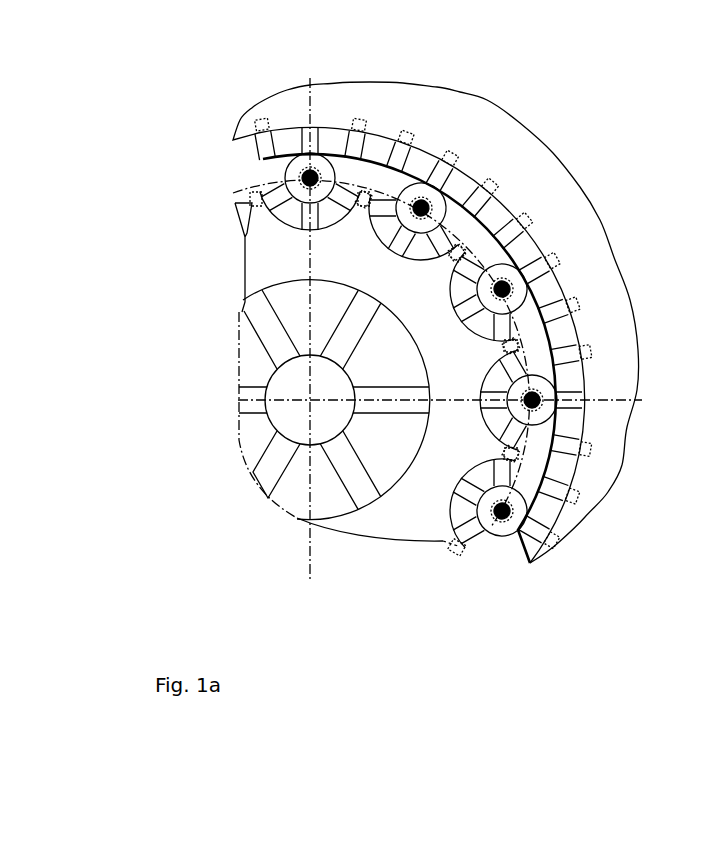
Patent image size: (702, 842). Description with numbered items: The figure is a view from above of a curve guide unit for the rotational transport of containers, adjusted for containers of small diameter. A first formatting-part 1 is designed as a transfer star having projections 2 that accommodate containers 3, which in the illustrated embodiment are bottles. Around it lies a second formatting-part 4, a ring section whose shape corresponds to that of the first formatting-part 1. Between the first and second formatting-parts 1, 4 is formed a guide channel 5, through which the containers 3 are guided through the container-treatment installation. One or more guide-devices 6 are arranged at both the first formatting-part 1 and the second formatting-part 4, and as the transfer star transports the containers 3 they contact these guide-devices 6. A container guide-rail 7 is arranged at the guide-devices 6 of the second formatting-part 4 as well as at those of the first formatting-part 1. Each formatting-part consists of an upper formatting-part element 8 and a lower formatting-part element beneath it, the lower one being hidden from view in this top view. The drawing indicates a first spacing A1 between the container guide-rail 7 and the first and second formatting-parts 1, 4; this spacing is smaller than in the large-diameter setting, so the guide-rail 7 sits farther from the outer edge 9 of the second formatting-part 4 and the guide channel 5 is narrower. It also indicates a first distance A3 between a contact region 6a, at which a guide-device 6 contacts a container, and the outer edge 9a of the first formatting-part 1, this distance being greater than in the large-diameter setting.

The first formatting-part 1 is at (215, 460).
The projections 2 is at (236, 272).
The containers 3 is at (286, 177).
The second formatting-part 4 is at (600, 498).
The guide channel 5 is at (503, 556).
The guide-devices 6 is at (562, 263).
The contact region 6a is at (478, 291).
The container guide-rail 7 is at (473, 177).
The upper formatting-part element 8 is at (410, 108).
The outer edge of the second formatting-part 9 is at (584, 378).
The outer edge of the first formatting-part 9a is at (497, 324).
The first spacing A1 is at (533, 335).
The first distance A3 is at (412, 214).